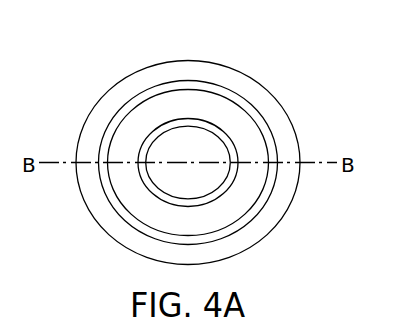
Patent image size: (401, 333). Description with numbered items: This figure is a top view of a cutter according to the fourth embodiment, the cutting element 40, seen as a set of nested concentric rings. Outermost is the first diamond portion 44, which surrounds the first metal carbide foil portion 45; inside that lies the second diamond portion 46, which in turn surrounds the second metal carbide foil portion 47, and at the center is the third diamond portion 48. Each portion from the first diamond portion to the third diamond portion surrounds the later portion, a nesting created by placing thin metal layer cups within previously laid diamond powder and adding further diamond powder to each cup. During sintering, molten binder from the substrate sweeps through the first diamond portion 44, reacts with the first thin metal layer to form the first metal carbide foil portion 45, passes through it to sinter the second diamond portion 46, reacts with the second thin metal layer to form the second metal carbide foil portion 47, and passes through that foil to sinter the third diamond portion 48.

The cutting element 40 is at (326, 54).
The first diamond portion 44 is at (270, 112).
The first metal carbide foil portion 45 is at (232, 95).
The second diamond portion 46 is at (194, 105).
The second metal carbide foil portion 47 is at (175, 121).
The third diamond portion 48 is at (166, 143).